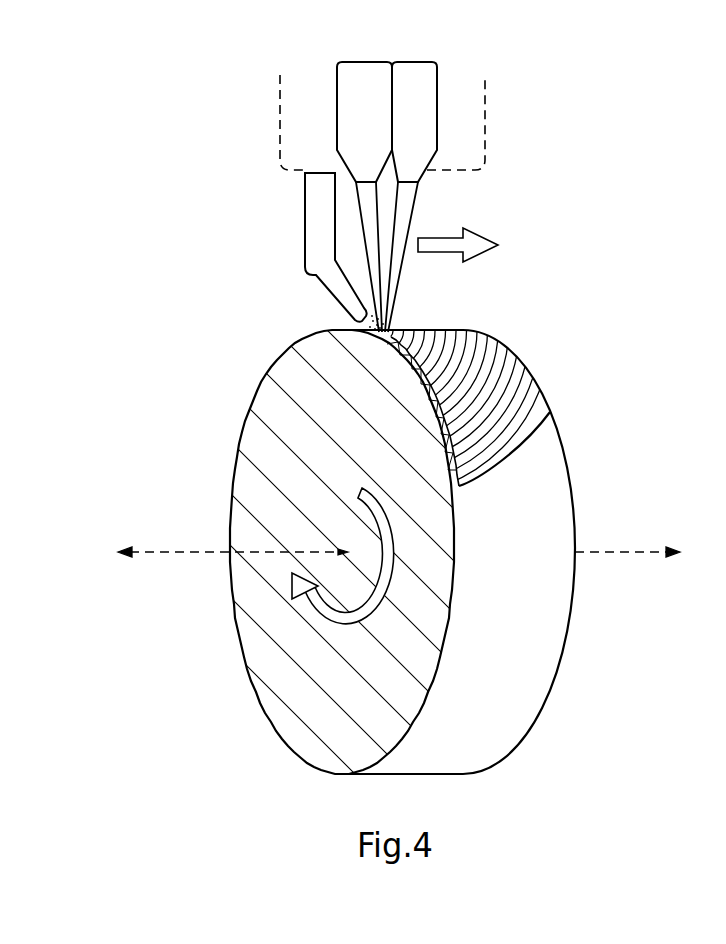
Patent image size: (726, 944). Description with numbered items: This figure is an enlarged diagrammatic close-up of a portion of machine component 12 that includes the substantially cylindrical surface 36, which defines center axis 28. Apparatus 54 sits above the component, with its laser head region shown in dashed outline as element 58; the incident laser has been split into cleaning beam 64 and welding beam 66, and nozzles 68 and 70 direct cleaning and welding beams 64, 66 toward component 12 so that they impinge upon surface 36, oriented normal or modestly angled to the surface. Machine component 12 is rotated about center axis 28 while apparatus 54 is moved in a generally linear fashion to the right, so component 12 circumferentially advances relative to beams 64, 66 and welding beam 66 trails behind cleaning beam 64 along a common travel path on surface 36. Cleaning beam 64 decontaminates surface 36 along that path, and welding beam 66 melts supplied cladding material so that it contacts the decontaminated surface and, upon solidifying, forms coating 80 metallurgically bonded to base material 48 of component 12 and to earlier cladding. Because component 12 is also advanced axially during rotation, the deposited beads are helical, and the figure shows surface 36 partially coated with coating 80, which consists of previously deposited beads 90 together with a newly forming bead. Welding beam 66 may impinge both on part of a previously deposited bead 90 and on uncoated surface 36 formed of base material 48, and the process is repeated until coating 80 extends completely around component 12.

The machine component 12 is at (363, 473).
The center axis 28 is at (168, 550).
The surface 36 is at (499, 562).
The base material 48 is at (290, 363).
The apparatus 54 is at (370, 197).
The welding head 58 is at (487, 80).
The cleaning beam 64 is at (400, 263).
The welding beam 66 is at (370, 243).
The nozzle 68 is at (437, 128).
The nozzle 70 is at (337, 128).
The coating 80 is at (517, 367).
The previously deposited beads 90 is at (475, 332).